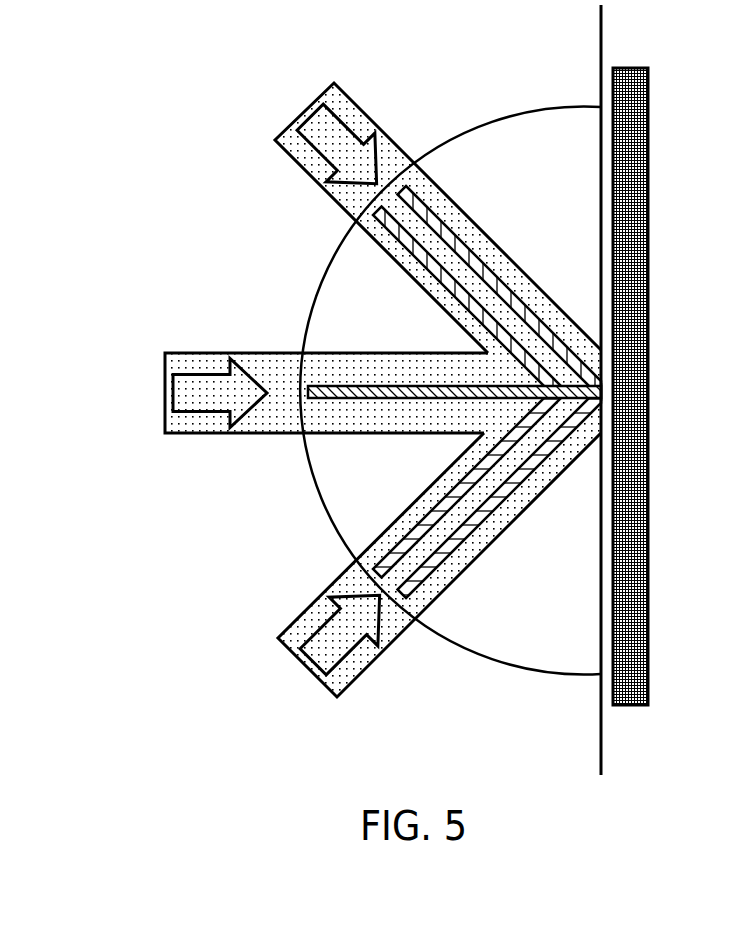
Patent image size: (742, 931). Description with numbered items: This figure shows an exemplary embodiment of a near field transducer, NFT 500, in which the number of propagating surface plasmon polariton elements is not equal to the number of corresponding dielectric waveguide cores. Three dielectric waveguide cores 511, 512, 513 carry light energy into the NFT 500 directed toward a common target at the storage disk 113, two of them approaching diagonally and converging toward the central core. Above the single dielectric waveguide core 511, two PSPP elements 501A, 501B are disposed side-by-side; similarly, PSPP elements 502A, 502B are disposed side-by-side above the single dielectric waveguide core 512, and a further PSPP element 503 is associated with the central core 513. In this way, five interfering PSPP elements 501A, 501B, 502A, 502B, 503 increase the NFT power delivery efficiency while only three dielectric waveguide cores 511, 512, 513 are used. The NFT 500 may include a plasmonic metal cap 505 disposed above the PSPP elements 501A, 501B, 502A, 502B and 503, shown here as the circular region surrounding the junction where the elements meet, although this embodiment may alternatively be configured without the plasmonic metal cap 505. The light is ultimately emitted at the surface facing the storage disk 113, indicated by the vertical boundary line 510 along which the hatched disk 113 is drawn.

The near field transducer 500 is at (130, 80).
The substrate / mirror surface line 510 is at (603, 43).
The storage disk 113 is at (650, 387).
The dielectric waveguide core 511 is at (313, 102).
The dielectric waveguide core 512 is at (300, 661).
The dielectric waveguide core 513 is at (183, 352).
The PSPP element 501A is at (393, 240).
The PSPP element 501B is at (442, 222).
The PSPP element 502A is at (378, 562).
The PSPP element 502B is at (432, 575).
The PSPP element 503 is at (383, 400).
The plasmonic metal cap 505 is at (323, 453).